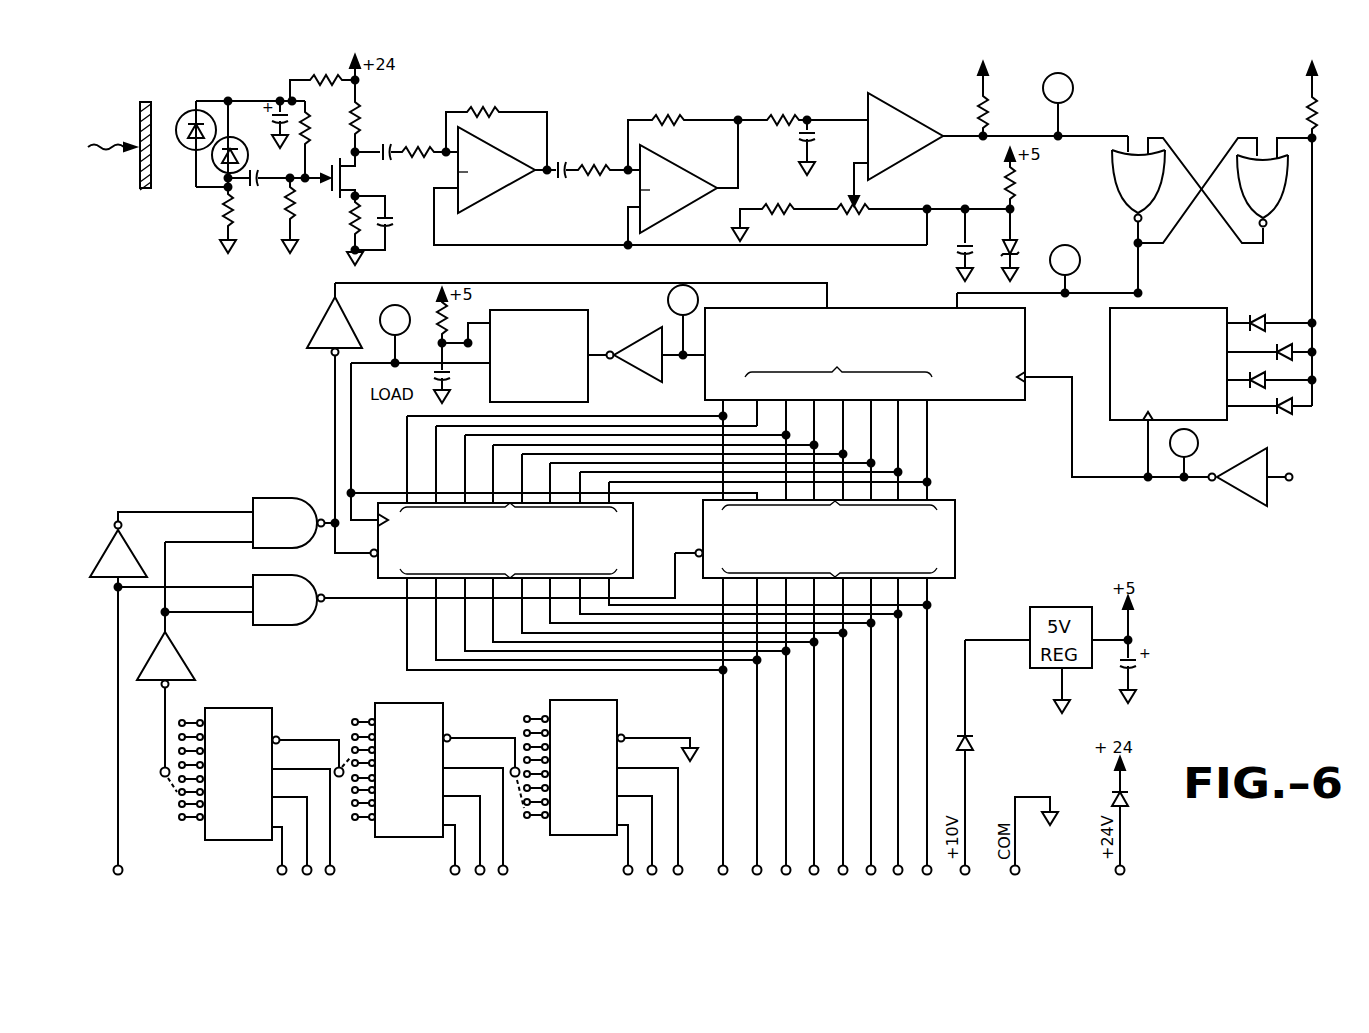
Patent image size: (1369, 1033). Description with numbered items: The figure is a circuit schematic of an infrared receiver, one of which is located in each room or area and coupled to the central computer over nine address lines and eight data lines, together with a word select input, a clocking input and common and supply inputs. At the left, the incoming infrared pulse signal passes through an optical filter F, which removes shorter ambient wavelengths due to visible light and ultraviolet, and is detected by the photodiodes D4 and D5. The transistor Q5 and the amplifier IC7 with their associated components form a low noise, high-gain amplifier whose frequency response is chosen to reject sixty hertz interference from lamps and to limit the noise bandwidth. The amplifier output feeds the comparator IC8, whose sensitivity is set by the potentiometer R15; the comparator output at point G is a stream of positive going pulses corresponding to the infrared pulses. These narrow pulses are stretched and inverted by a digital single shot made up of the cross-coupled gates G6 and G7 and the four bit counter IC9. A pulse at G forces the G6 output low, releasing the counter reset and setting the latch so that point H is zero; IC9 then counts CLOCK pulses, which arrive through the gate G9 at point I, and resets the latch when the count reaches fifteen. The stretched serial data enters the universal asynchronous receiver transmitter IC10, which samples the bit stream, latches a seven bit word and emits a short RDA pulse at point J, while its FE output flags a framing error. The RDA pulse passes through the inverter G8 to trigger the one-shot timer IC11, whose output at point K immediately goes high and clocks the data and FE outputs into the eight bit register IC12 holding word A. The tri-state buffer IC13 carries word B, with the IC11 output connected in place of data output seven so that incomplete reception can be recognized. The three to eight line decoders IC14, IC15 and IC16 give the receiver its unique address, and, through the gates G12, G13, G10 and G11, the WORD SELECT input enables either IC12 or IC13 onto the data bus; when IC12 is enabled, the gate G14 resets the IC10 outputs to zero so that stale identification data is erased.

The optical filter F is at (145, 157).
The photodiode D4 is at (184, 144).
The photodiode D5 is at (235, 144).
The transistor Q5 is at (362, 172).
The amplifier integrated circuit IC7 is at (680, 178).
The comparator IC8 is at (933, 134).
The sensitivity adjustment resistor R15 is at (873, 224).
The comparator output point G is at (1058, 104).
The latch output point H is at (1065, 269).
The NOR gate G6 is at (1187, 214).
The NOR gate G7 is at (1240, 234).
The four bit counter IC9 is at (1170, 394).
The clock input point I is at (1184, 455).
The clock inverter G9 is at (1253, 477).
The reset inverter G14 is at (338, 425).
The one-shot output point K is at (395, 336).
The timer IC11 is at (548, 356).
The inverter G8 is at (656, 354).
The RDA output point J is at (683, 320).
The universal asynchronous receiver transmitter IC10 is at (865, 404).
The eight bit register IC12 is at (651, 545).
The eight bit buffer IC13 is at (640, 687).
The inverter G12 is at (171, 693).
The NAND gate G10 is at (250, 523).
The NAND gate G11 is at (396, 600).
The inverter G13 is at (166, 667).
The three to eight line decoder IC14 is at (264, 791).
The three to eight line decoder IC15 is at (438, 789).
The three to eight line decoder IC16 is at (611, 787).